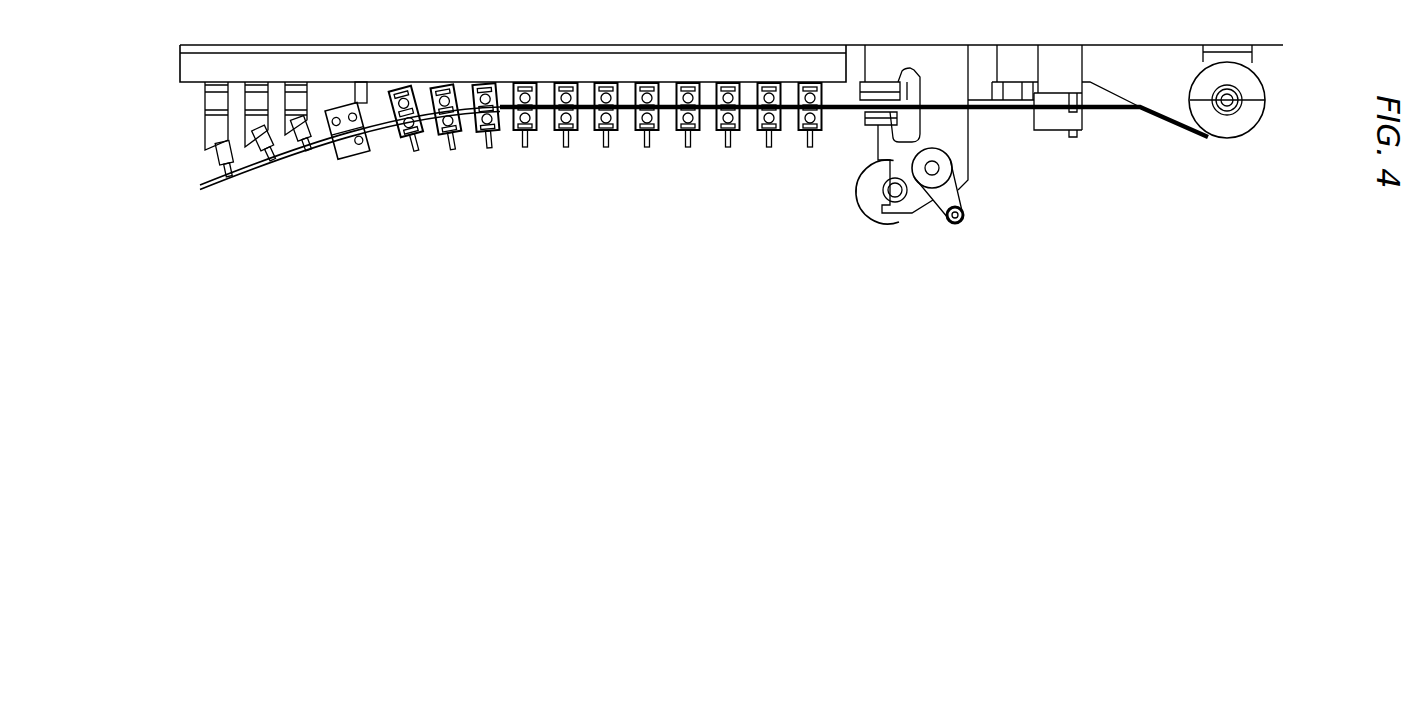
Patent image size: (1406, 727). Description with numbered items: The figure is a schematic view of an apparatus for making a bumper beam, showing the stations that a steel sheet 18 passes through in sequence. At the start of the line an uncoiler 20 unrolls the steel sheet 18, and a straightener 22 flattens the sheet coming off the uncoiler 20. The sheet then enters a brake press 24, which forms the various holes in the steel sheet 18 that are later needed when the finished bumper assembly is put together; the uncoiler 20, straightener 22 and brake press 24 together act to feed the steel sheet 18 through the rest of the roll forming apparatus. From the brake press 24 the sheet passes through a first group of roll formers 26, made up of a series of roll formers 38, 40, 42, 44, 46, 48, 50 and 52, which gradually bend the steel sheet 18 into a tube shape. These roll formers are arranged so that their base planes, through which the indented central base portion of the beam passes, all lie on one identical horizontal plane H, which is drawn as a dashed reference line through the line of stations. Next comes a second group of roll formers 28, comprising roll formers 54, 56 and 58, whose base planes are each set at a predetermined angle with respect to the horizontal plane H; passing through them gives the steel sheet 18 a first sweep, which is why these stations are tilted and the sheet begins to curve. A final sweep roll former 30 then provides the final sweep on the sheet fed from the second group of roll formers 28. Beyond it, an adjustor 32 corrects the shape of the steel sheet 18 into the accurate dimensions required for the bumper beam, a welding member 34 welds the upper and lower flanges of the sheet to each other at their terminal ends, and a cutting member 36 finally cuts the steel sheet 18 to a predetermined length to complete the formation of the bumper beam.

The horizontal plane H is at (205, 112).
The steel sheet 18 is at (1172, 125).
The uncoiler 20 is at (1250, 162).
The straightener 22 is at (1050, 155).
The brake press 24 is at (933, 260).
The first group of roll formers 26 is at (520, 243).
The second group of roll formers 28 is at (494, 240).
The final sweep roll former 30 is at (360, 172).
The adjustor 32 is at (306, 184).
The welding member 34 is at (271, 188).
The cutting member 36 is at (227, 200).
The roll former 38 is at (810, 148).
The roll former 40 is at (769, 148).
The roll former 42 is at (728, 148).
The roll former 44 is at (688, 148).
The roll former 46 is at (647, 148).
The roll former 48 is at (606, 148).
The roll former 50 is at (566, 148).
The roll former 52 is at (525, 148).
The roll former 54 is at (487, 149).
The roll former 56 is at (449, 151).
The roll former 58 is at (412, 154).